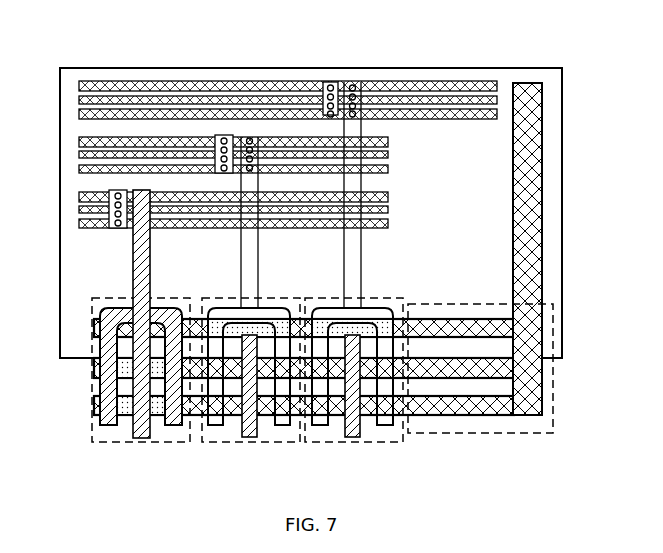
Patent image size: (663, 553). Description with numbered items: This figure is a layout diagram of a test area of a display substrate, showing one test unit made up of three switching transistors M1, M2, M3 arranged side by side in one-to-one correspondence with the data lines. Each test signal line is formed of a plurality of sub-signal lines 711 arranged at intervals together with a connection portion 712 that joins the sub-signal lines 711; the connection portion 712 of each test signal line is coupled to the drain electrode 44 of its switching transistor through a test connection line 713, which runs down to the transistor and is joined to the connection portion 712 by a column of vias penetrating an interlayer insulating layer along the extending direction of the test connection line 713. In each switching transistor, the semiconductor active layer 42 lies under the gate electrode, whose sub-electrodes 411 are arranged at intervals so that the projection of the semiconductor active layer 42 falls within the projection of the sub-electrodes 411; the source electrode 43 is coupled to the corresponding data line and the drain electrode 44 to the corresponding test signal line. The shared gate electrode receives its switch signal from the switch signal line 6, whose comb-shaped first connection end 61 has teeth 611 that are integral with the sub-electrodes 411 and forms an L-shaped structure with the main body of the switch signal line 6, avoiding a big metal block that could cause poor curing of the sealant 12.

The sub-signal lines 711 is at (102, 83).
The connection portion 712 is at (323, 82).
The test connection line 713 is at (334, 74).
The switch signal line 6 is at (533, 222).
The sealant 12 is at (558, 276).
The first connection end 61 is at (553, 405).
The teeth 611 is at (470, 430).
The semiconductor active layer 42 is at (125, 365).
The source electrode 43 is at (130, 397).
The drain electrode 44 is at (110, 418).
The sub-electrodes 411 is at (198, 443).
The switching transistor M1 is at (115, 335).
The switching transistor M2 is at (251, 390).
The switching transistor M3 is at (340, 443).